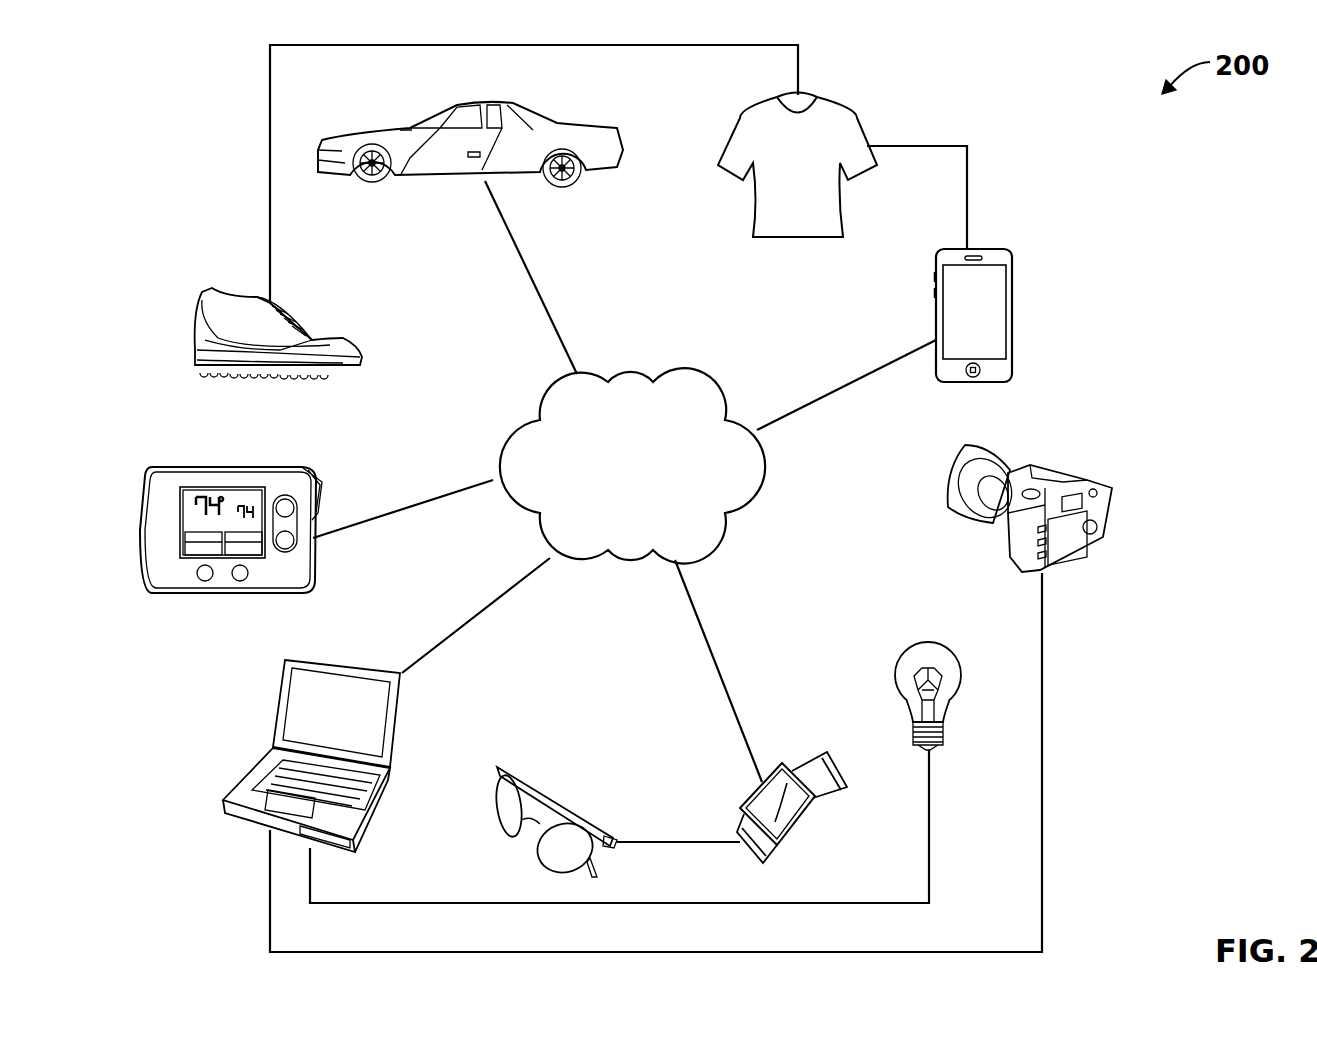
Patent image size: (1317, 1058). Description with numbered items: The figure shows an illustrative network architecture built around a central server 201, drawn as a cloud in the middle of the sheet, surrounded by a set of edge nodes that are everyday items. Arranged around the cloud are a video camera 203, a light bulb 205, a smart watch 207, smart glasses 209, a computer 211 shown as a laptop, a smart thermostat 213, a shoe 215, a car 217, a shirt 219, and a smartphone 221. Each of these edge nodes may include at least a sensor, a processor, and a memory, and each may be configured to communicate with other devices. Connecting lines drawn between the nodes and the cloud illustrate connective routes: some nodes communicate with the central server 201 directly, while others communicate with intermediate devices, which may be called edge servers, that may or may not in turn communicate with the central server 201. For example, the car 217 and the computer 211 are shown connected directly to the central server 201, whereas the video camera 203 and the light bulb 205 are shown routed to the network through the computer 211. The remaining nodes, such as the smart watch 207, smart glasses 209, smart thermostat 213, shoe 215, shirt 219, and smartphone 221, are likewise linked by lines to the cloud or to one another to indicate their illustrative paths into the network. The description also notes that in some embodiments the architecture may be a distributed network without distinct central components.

The central server 201 is at (632, 376).
The video camera 203 is at (1050, 470).
The light bulb 205 is at (932, 644).
The smart watch 207 is at (814, 760).
The smart glasses 209 is at (542, 792).
The computer 211 is at (330, 661).
The smart thermostat 213 is at (213, 465).
The shoe 215 is at (208, 290).
The car 217 is at (510, 103).
The shirt 219 is at (836, 110).
The smartphone 221 is at (992, 250).